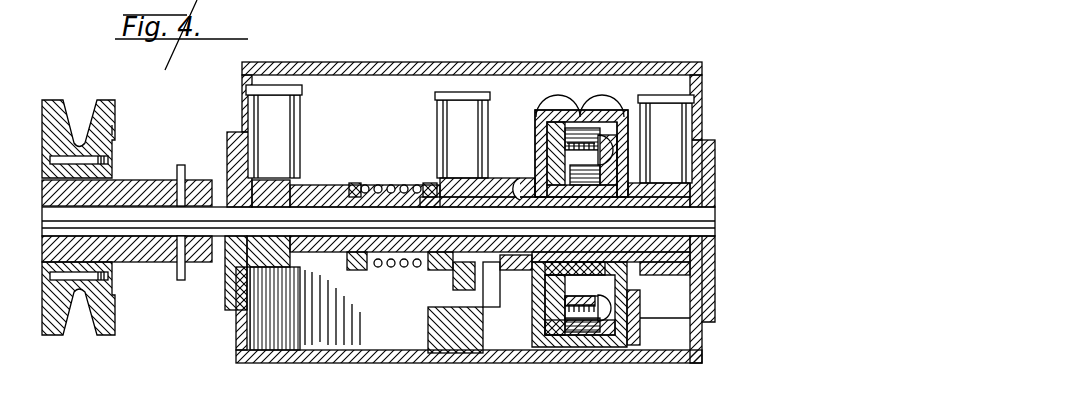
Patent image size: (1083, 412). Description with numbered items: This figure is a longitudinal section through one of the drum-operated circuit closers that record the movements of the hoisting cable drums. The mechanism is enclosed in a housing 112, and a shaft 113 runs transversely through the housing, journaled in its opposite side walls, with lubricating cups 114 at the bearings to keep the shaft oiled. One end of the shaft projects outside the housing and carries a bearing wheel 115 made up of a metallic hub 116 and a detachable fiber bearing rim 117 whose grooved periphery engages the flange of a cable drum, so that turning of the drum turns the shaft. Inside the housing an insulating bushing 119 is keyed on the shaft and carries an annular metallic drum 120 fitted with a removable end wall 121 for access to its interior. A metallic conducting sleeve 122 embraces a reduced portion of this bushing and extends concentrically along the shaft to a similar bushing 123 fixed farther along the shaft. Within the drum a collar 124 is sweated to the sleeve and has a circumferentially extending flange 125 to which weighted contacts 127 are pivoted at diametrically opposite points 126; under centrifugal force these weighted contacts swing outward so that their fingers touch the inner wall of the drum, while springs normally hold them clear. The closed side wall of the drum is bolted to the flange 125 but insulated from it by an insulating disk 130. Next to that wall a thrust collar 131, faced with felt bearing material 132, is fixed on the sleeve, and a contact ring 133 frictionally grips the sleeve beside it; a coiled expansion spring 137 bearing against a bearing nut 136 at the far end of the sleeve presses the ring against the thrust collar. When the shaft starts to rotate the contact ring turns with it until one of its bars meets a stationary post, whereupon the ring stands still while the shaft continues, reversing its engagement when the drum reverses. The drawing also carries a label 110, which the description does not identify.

The pulley 110 is at (78, 118).
The housing 112 is at (348, 365).
The shaft 113 is at (222, 222).
The lubricating cups 114 is at (268, 110).
The bearing wheel 115 is at (118, 180).
The metallic hub 116 is at (50, 239).
The bearing rim 117 is at (112, 125).
The insulating bushing 119 is at (715, 246).
The annular metallic drum 120 is at (565, 110).
The removable end wall 121 is at (628, 127).
The conducting sleeve 122 is at (393, 185).
The bushing 123 is at (316, 195).
The collar 124 is at (607, 187).
The circumferentially extending flange 125 is at (538, 130).
The pivots 126 is at (573, 115).
The weighted contacts 127 is at (575, 322).
The insulating disk 130 is at (542, 347).
The thrust collar 131 is at (512, 178).
The bearing material 132 is at (488, 272).
The contact ring 133 is at (440, 267).
The bearing nut 136 is at (355, 270).
The coiled expansion spring 137 is at (415, 185).